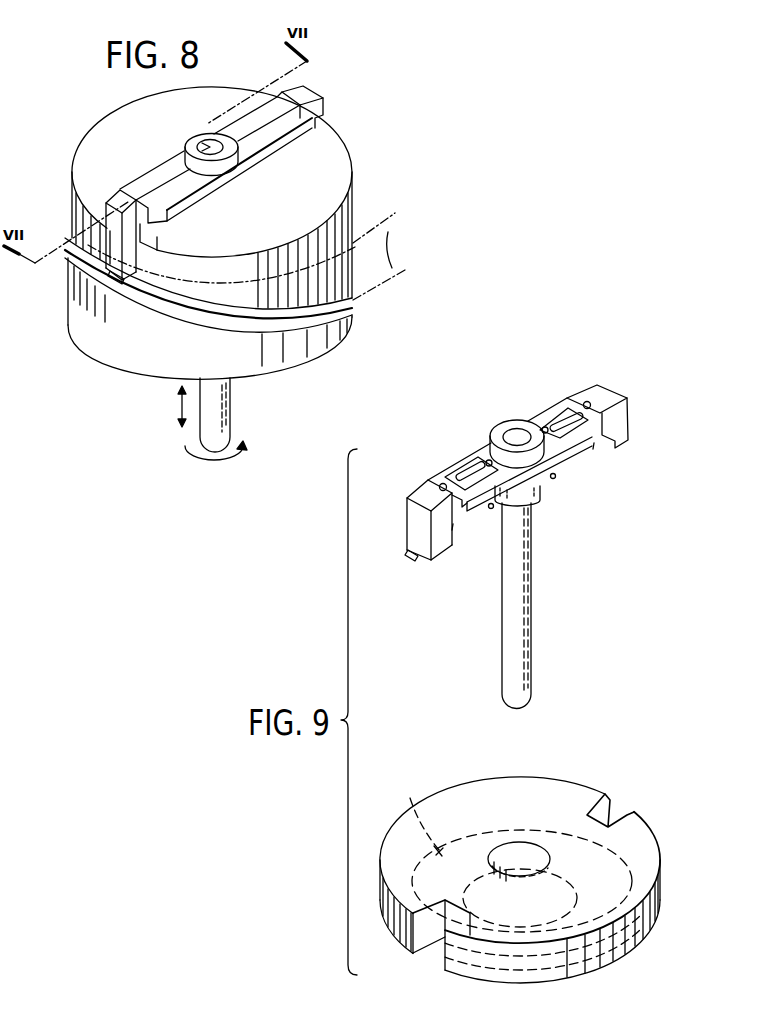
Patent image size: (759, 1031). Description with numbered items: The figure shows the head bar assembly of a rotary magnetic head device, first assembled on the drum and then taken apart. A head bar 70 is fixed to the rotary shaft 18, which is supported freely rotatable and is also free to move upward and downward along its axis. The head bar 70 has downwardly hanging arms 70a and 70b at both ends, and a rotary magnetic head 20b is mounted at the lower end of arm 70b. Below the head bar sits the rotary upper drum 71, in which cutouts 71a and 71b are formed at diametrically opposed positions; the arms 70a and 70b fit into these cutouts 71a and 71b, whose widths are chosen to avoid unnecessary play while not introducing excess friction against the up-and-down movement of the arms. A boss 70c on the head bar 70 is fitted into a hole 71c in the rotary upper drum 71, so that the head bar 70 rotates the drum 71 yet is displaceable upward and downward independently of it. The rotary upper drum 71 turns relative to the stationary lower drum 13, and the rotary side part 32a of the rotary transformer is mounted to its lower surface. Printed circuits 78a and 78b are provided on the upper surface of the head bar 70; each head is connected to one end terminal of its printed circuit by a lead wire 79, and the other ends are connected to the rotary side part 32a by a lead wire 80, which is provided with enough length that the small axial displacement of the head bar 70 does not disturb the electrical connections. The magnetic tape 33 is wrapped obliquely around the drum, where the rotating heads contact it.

In FIG. 8, the stationary lower drum 13 is at (292, 357).
In FIG. 8, the rotary shaft 18 is at (228, 407).
In FIG. 9, the rotary shaft 18 is at (532, 595).
In FIG. 8, the rotary magnetic head 20b is at (118, 285).
In FIG. 9, the rotary magnetic head 20b is at (414, 559).
In FIG. 9, the rotary side part of the rotary transformer 32a is at (413, 816).
In FIG. 8, the magnetic tape 33 is at (390, 250).
In FIG. 8, the head bar 70 is at (162, 168).
In FIG. 9, the head bar 70 is at (484, 440).
In FIG. 8, the downwardly hanging arm 70a is at (324, 105).
In FIG. 9, the downwardly hanging arm 70a is at (625, 412).
In FIG. 8, the downwardly hanging arm 70b is at (105, 213).
In FIG. 9, the downwardly hanging arm 70b is at (410, 522).
In FIG. 9, the boss 70c is at (541, 492).
In FIG. 8, the rotary upper drum 71 is at (345, 157).
In FIG. 9, the rotary upper drum 71 is at (560, 788).
In FIG. 9, the cutout 71a is at (617, 815).
In FIG. 8, the cutout 71b is at (152, 240).
In FIG. 9, the cutout 71b is at (428, 948).
In FIG. 9, the hole 71c is at (516, 848).
In FIG. 9, the printed circuit 78a is at (553, 406).
In FIG. 9, the printed circuit 78b is at (458, 470).
In FIG. 9, the lead wire 79 is at (453, 528).
In FIG. 9, the lead wire 80 is at (490, 508).